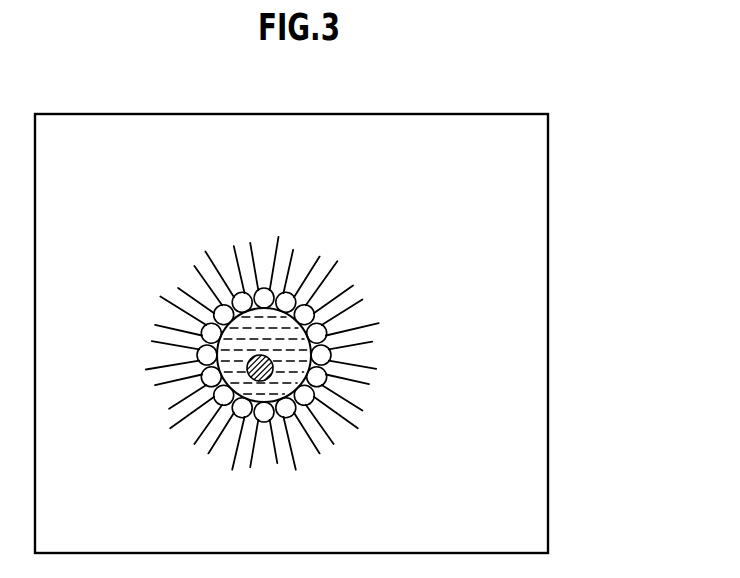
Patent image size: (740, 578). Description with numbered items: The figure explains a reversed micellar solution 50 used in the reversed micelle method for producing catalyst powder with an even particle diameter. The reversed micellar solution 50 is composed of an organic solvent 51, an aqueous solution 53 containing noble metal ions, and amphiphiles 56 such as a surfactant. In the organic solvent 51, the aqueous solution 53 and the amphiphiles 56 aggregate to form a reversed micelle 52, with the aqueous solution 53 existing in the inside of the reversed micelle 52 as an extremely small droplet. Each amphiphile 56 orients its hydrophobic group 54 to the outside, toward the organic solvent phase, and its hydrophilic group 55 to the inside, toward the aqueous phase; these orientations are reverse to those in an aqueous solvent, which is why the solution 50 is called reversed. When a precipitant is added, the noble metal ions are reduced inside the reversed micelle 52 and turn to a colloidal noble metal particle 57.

The reversed micellar solution 50 is at (593, 299).
The organic solvent 51 is at (524, 206).
The reversed micelle 52 is at (313, 328).
The aqueous solution 53 is at (298, 365).
The hydrophobic group 54 is at (328, 275).
The hydrophilic group 55 is at (317, 310).
The amphiphile 56 is at (313, 346).
The colloidal noble metal particle 57 is at (250, 380).